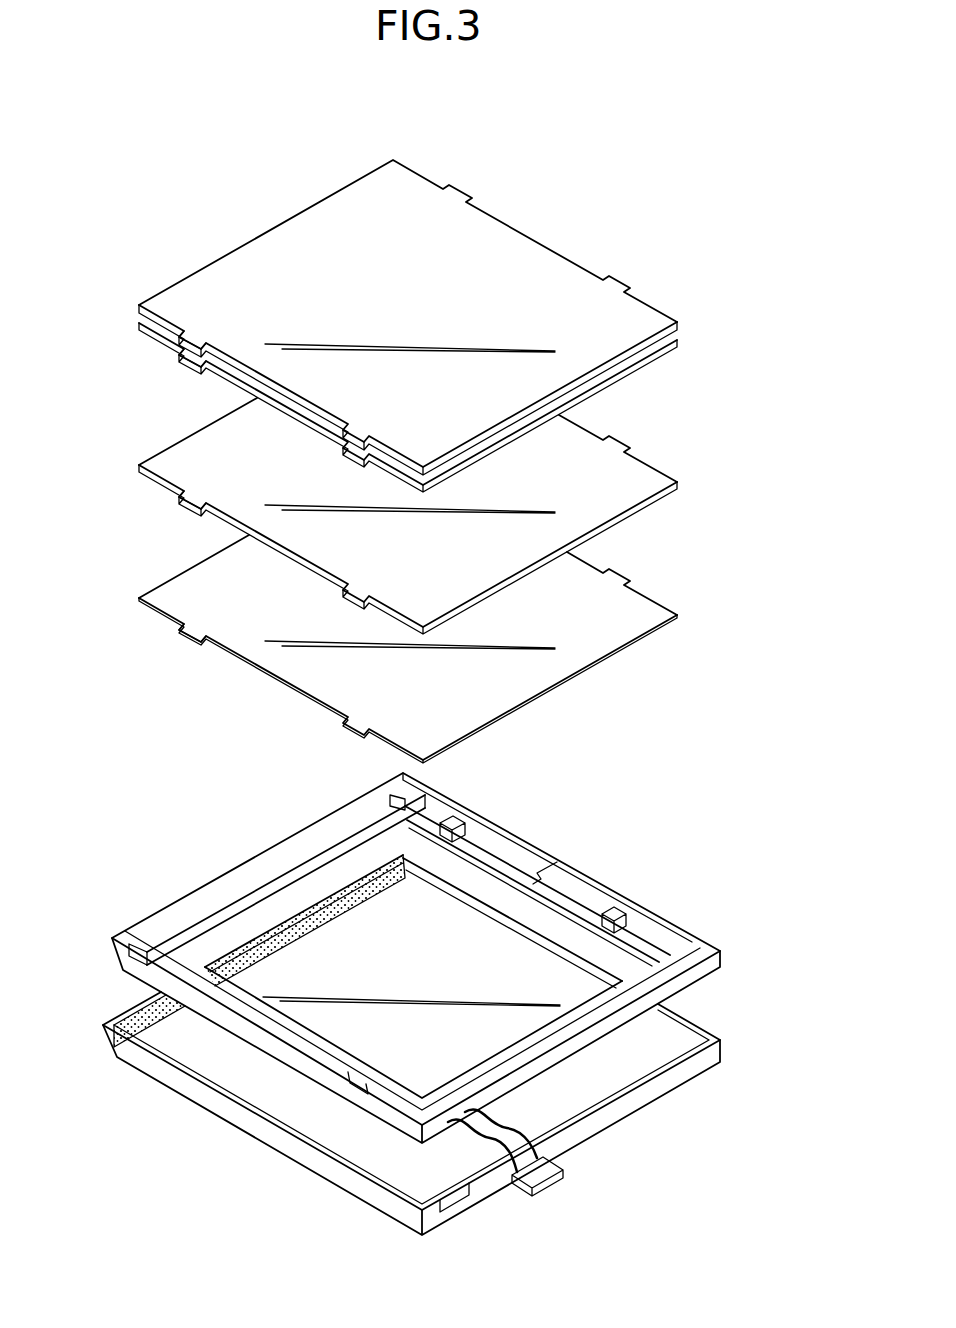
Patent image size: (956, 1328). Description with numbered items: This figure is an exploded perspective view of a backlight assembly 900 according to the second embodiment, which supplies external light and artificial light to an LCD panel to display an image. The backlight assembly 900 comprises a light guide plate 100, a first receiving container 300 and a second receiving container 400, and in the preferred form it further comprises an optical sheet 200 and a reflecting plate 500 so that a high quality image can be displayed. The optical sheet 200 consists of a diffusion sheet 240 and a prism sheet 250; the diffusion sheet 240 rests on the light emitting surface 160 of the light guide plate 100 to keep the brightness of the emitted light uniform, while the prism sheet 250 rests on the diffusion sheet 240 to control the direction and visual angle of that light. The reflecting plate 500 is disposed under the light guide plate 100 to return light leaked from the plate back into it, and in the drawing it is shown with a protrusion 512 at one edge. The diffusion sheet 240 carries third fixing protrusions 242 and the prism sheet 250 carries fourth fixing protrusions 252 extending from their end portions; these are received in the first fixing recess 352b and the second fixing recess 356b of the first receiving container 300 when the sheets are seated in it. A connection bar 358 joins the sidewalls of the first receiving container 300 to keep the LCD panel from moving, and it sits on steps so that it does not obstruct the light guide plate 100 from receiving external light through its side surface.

The backlight assembly 900 is at (714, 240).
The optical sheet 200 is at (766, 296).
The prism sheet 250 is at (680, 312).
The fourth fixing protrusion 252 is at (176, 335).
The diffusion sheet 240 is at (675, 350).
The third fixing protrusion 242 is at (181, 362).
The light guide plate 100 is at (688, 455).
The light emitting surface 160 is at (176, 470).
The reflecting plate 500 is at (672, 592).
The protrusion of reflecting sheet 512 is at (183, 637).
The first receiving container 300 is at (672, 902).
The connection bar 358 is at (265, 888).
The second fixing recess 356b is at (624, 912).
The first fixing recess 352b is at (372, 1078).
The second receiving container 400 is at (712, 1022).